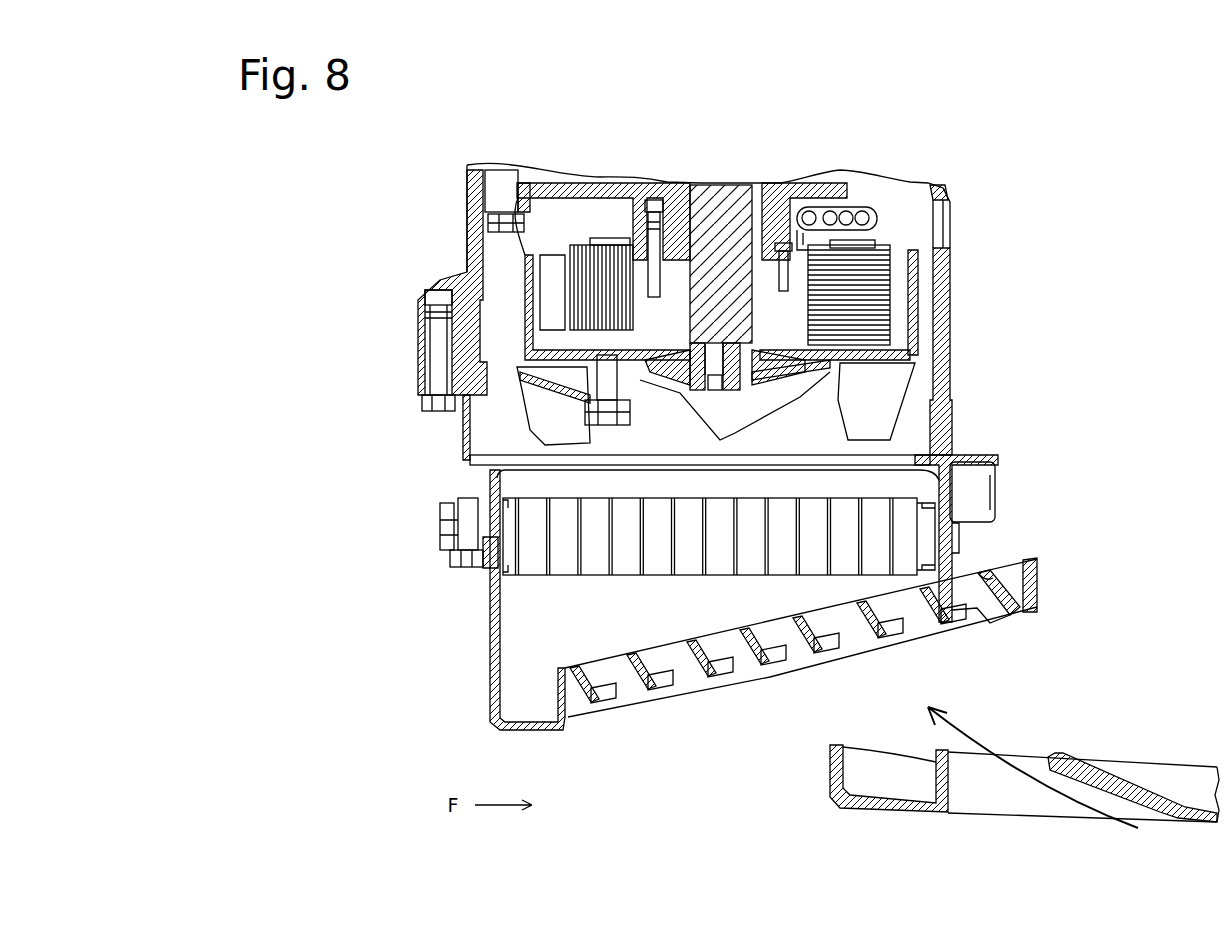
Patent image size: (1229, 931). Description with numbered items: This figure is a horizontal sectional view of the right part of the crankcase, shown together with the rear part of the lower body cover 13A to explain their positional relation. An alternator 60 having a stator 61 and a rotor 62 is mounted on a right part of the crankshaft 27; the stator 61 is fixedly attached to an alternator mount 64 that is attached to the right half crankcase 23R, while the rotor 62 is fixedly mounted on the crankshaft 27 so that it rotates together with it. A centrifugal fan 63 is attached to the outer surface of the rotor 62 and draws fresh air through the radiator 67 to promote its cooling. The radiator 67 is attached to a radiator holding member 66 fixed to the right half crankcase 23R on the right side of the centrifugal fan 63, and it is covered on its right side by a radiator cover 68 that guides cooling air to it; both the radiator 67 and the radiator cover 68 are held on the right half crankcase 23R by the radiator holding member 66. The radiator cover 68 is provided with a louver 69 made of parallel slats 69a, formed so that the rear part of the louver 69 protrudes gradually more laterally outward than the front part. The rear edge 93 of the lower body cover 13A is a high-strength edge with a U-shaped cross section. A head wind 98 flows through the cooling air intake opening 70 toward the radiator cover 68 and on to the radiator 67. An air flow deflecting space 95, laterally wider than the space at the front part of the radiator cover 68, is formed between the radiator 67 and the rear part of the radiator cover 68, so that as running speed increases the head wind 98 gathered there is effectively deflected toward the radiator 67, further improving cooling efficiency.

The crankshaft 27 is at (718, 184).
The alternator mount 64 is at (517, 191).
The right half crankcase 23R is at (470, 255).
The alternator 60 is at (372, 308).
The stator 61 is at (602, 278).
The rotor 62 is at (533, 337).
The centrifugal fan 63 is at (597, 357).
The radiator holding member 66 is at (951, 360).
The radiator 67 is at (567, 547).
The radiator cover 68 is at (497, 693).
The air flow deflecting space 95 is at (570, 629).
The louver 69 is at (669, 717).
The slats 69a is at (758, 655).
The rear edge 93 is at (870, 800).
The cooling air intake opening 70 is at (966, 789).
The head wind 98 is at (1077, 811).
The lower body cover 13A is at (1190, 823).